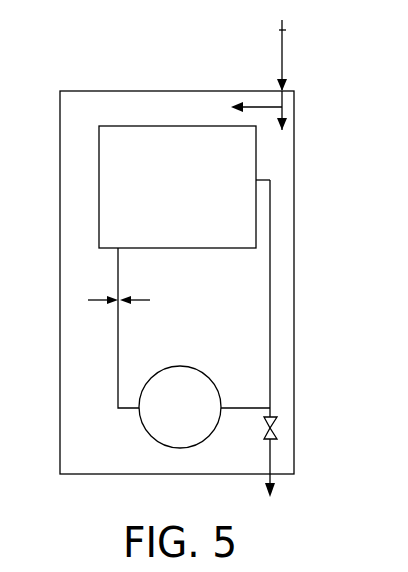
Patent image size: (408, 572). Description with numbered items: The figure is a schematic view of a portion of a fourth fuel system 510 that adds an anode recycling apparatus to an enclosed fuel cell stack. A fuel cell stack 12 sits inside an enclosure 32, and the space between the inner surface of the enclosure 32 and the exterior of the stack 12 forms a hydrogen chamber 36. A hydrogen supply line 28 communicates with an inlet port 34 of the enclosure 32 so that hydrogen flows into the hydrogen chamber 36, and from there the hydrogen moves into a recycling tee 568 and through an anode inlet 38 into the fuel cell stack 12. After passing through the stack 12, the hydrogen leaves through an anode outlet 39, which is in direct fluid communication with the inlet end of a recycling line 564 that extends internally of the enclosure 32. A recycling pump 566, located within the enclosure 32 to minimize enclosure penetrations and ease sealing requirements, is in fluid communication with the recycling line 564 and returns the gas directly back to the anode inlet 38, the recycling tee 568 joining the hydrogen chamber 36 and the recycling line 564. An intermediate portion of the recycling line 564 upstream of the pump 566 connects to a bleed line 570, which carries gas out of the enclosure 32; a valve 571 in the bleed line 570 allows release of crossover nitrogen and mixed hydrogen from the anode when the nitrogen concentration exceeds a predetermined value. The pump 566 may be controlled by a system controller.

The fourth fuel system 510 is at (163, 255).
The enclosure 32 is at (179, 91).
The fuel cell stack 12 is at (192, 198).
The hydrogen supply line 28 is at (286, 28).
The inlet port 34 is at (284, 88).
The anode outlet 39 is at (258, 178).
The recycling line 564 is at (271, 201).
The hydrogen chamber 36 is at (287, 270).
The anode inlet 38 is at (119, 250).
The recycling tee 568 is at (118, 304).
The recycling pump 566 is at (141, 426).
The valve 571 is at (273, 417).
The bleed line 570 is at (272, 448).